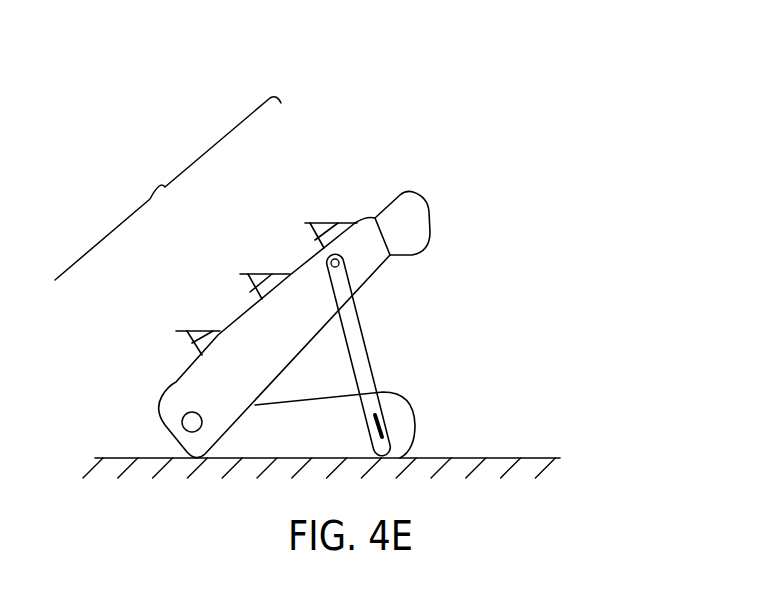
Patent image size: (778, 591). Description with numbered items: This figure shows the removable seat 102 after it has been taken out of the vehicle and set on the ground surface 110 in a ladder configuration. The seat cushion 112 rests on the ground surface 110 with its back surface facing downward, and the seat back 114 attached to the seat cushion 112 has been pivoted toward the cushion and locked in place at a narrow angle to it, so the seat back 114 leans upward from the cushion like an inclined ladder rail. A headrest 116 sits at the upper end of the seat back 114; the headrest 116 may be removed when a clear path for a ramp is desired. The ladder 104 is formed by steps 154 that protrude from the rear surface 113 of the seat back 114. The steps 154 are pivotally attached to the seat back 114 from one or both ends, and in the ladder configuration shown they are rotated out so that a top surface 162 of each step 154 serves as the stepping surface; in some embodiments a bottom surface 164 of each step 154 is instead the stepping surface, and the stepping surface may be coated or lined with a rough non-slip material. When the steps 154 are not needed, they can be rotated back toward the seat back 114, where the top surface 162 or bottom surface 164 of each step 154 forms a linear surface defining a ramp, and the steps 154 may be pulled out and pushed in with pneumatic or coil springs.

The seat 102 is at (344, 96).
The ladder 104 is at (168, 188).
The ground surface 110 is at (513, 458).
The seat cushion 112 is at (282, 451).
The rear surface 113 is at (172, 382).
The seat back 114 is at (277, 366).
The headrest 116 is at (407, 196).
The steps 154 is at (163, 318).
The top surface 162 is at (195, 329).
The bottom surface 164 is at (308, 250).